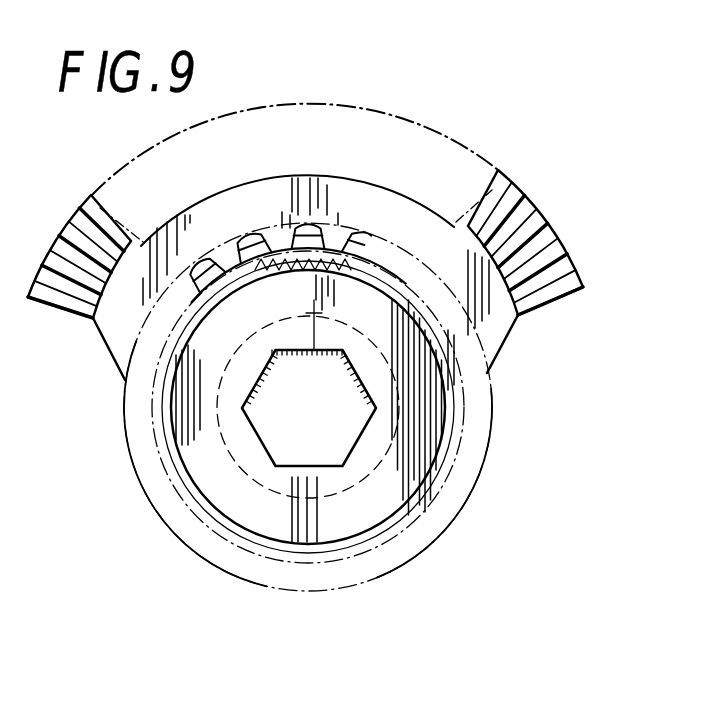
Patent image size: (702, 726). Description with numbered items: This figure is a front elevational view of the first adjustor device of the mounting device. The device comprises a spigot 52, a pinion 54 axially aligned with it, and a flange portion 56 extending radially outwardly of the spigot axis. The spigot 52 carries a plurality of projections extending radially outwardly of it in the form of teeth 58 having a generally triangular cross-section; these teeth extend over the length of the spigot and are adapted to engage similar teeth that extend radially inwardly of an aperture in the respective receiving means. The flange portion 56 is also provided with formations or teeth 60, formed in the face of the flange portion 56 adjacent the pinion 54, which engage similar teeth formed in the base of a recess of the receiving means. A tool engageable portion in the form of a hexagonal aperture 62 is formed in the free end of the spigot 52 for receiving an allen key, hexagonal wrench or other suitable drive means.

The spigot 52 is at (273, 522).
The pinion 54 is at (299, 222).
The flange portion 56 is at (113, 333).
The teeth 58 is at (334, 257).
The teeth 60 is at (546, 228).
The hexagonal aperture 62 is at (270, 418).